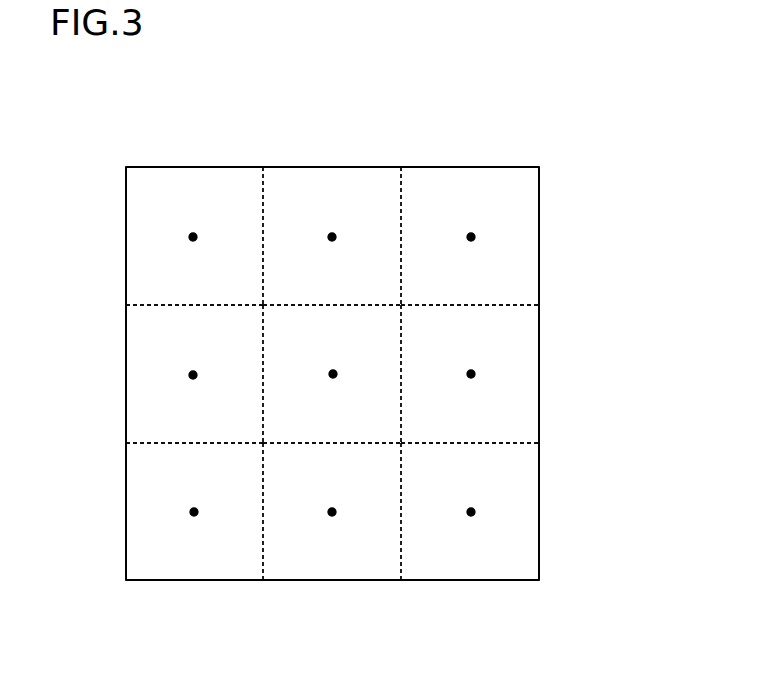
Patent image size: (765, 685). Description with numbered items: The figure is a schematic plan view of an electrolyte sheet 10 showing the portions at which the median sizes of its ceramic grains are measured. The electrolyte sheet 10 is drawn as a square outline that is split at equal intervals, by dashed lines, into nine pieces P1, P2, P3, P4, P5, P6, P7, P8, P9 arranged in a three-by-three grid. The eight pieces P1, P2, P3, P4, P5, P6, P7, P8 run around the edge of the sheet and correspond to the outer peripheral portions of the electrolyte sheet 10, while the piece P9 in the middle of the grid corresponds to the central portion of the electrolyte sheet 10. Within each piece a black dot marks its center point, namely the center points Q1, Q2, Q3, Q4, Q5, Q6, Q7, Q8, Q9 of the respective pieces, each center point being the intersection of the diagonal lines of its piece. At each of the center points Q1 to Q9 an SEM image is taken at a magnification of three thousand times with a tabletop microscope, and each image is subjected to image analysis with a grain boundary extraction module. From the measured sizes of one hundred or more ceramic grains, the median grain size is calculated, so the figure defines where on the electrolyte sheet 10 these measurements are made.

The electrolyte sheet 10 is at (519, 122).
The piece P1 is at (174, 183).
The piece P2 is at (312, 183).
The piece P3 is at (471, 183).
The piece P4 is at (525, 327).
The piece P5 is at (500, 563).
The piece P6 is at (361, 563).
The piece P7 is at (202, 563).
The piece P8 is at (148, 408).
The piece P9 is at (385, 410).
The center point Q1 is at (190, 237).
The center point Q2 is at (333, 233).
The center point Q3 is at (474, 237).
The center point Q4 is at (474, 374).
The center point Q5 is at (474, 512).
The center point Q6 is at (332, 516).
The center point Q7 is at (191, 512).
The center point Q8 is at (190, 375).
The center point Q9 is at (336, 374).